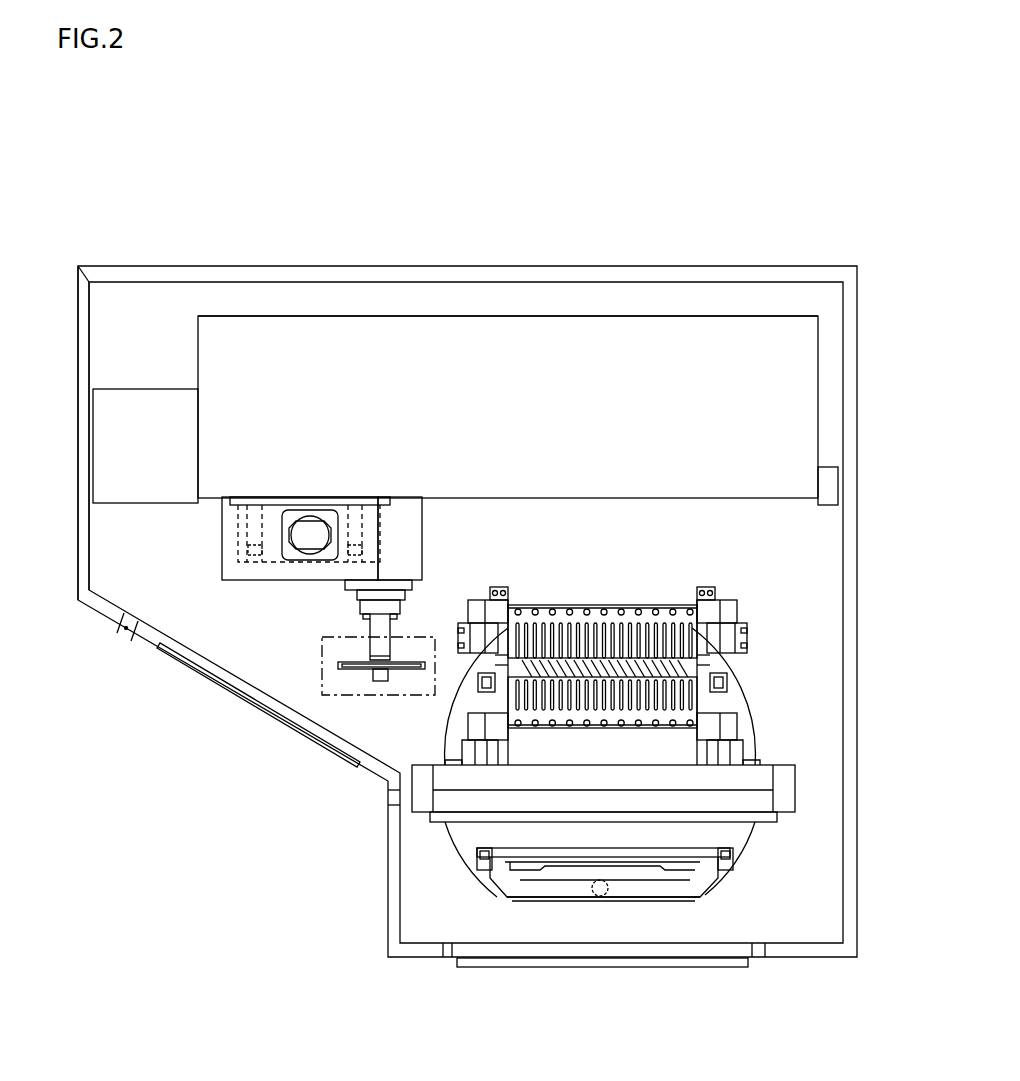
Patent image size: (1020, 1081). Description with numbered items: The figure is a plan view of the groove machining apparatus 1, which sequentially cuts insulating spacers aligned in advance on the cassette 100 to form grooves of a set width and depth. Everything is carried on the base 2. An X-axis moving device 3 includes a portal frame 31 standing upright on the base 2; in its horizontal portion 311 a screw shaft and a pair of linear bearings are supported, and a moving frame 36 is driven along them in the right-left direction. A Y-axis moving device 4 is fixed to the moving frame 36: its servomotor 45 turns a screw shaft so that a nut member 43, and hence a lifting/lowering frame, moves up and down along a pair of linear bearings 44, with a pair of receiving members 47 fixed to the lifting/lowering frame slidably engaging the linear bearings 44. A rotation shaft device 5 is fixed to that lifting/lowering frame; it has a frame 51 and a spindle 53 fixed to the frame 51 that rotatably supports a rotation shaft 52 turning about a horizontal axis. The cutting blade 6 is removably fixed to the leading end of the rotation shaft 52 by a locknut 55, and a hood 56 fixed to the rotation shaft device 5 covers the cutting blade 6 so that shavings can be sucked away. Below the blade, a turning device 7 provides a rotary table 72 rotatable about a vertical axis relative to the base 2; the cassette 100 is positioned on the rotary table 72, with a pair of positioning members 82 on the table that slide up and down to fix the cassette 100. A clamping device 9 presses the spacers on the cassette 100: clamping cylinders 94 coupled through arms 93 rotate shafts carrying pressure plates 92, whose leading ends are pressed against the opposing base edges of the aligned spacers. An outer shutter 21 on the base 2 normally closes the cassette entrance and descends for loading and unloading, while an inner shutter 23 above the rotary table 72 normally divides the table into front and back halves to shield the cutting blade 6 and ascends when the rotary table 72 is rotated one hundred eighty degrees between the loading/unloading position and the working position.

The groove machining apparatus 1 is at (84, 154).
The base 2 is at (70, 583).
The X-axis moving device 3 is at (602, 305).
The portal frame 31 is at (512, 312).
The horizontal portion 311 is at (426, 328).
The Y-axis moving device 4 is at (245, 590).
The rotation shaft device 5 is at (428, 520).
The frame 51 is at (398, 522).
The rotation shaft 52 is at (400, 622).
The spindle 53 is at (395, 585).
The locknut 55 is at (385, 690).
The hood 56 is at (295, 718).
The cutting blade 6 is at (342, 672).
The turning device 7 is at (735, 875).
The rotary table 72 is at (735, 838).
The clamping device 9 is at (648, 585).
The outer shutter 21 is at (545, 968).
The inner shutter 23 is at (435, 822).
The moving frame 36 is at (244, 497).
The nut member 43 is at (300, 562).
The linear bearings 44 is at (262, 497).
The servomotor 45 is at (312, 500).
The receiving members 47 is at (245, 568).
The positioning members 82 is at (730, 680).
The pressure plates 92 is at (597, 610).
The arms 93 is at (730, 605).
The clamping cylinders 94 is at (748, 628).
The cassette 100 is at (685, 900).